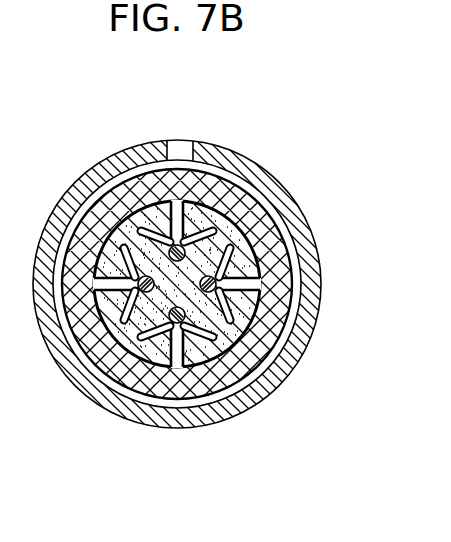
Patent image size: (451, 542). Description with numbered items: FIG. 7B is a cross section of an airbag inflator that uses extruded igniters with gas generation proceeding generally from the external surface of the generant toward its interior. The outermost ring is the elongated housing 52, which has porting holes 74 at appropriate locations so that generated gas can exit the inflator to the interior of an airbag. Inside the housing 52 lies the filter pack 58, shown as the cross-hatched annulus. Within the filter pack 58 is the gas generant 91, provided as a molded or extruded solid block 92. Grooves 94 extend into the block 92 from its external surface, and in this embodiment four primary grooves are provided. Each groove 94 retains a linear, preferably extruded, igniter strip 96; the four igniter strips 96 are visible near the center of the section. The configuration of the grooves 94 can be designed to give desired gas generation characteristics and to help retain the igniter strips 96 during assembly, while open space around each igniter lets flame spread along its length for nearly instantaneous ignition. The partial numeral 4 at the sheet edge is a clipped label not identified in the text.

The clipped reference numeral 4 is at (4, 145).
The elongated housing 52 is at (281, 379).
The filter pack 58 is at (223, 380).
The porting holes 74 is at (181, 148).
The gas generant 91 is at (223, 218).
The solid block 92 is at (245, 263).
The grooves 94 is at (117, 284).
The igniter strips 96 is at (180, 323).